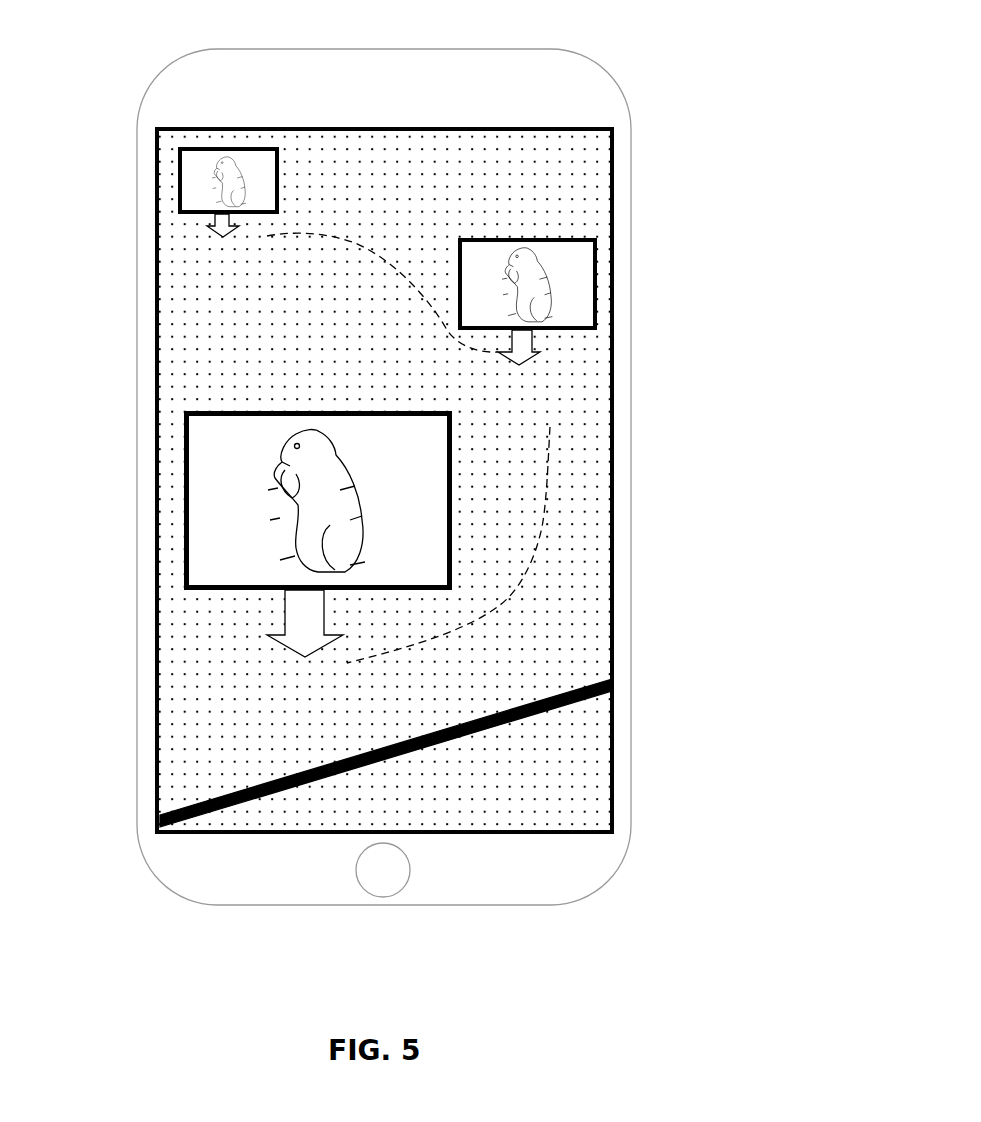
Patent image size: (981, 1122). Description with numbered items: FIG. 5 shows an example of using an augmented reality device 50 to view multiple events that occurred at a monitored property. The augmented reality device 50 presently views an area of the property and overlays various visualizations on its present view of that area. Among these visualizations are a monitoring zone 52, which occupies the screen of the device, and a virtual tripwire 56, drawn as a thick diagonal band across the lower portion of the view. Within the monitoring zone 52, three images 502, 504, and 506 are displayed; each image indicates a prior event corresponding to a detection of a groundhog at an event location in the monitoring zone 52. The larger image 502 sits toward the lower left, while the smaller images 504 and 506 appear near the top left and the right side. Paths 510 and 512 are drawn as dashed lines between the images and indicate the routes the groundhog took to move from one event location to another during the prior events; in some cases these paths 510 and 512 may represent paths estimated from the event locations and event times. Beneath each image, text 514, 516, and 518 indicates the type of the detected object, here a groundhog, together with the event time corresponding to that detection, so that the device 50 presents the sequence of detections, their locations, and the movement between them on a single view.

The augmented reality device 50 is at (602, 82).
The monitoring zone 52 is at (518, 640).
The virtual tripwire 56 is at (612, 683).
The image 502 is at (199, 583).
The image 504 is at (178, 197).
The image 506 is at (587, 277).
The path 510 is at (538, 530).
The path 512 is at (358, 240).
The text 514 is at (202, 686).
The text 516 is at (206, 285).
The text 518 is at (568, 405).